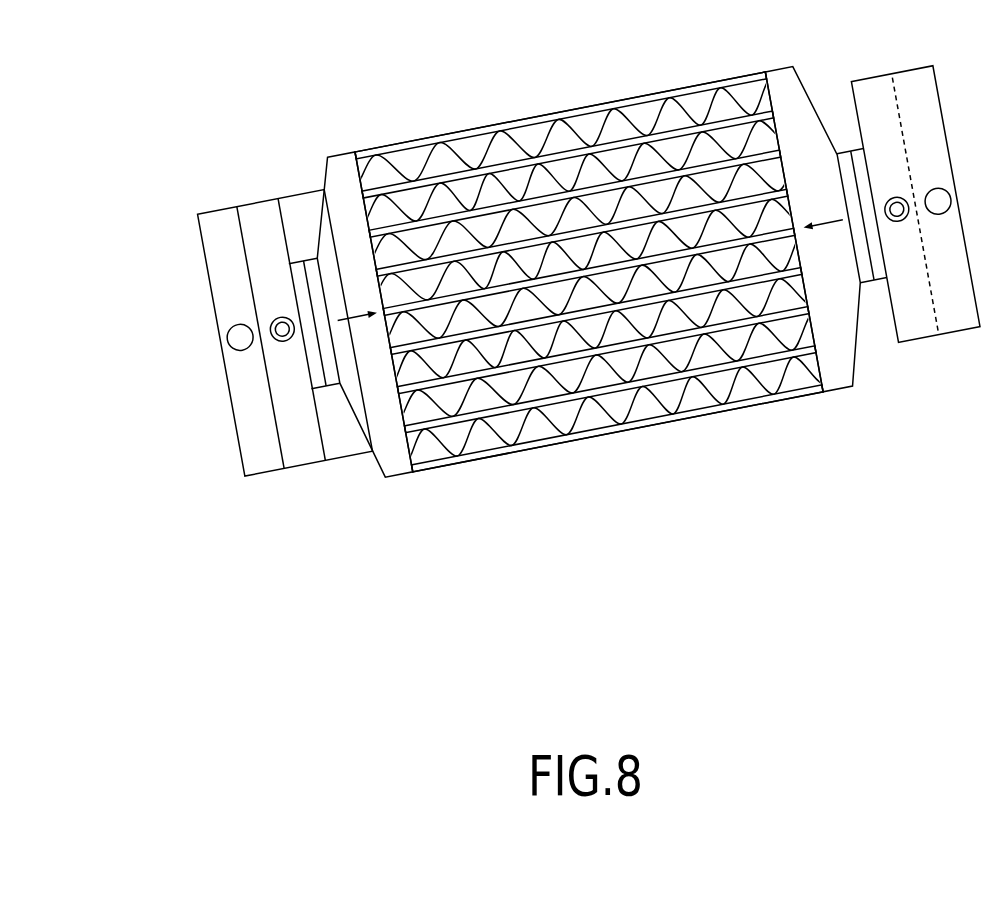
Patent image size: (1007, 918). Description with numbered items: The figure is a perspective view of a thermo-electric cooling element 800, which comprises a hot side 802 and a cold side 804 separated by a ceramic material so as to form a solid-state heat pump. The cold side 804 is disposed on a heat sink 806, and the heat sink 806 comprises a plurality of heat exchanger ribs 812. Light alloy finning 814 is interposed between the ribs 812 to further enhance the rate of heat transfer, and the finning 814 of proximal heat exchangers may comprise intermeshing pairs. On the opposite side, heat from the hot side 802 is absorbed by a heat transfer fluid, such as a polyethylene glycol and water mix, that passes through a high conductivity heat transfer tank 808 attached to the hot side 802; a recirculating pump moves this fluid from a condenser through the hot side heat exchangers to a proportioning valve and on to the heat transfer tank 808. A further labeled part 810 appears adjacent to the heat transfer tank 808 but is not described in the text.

The thermo-electric cooling element 800 is at (222, 95).
The hot side 802 is at (821, 210).
The cold side 804 is at (902, 243).
The heat sink 806 is at (338, 162).
The heat transfer tank 808 is at (217, 239).
The manifold fitting 810 is at (302, 202).
The heat exchanger ribs 812 is at (657, 93).
The light alloy finning 814 is at (543, 128).